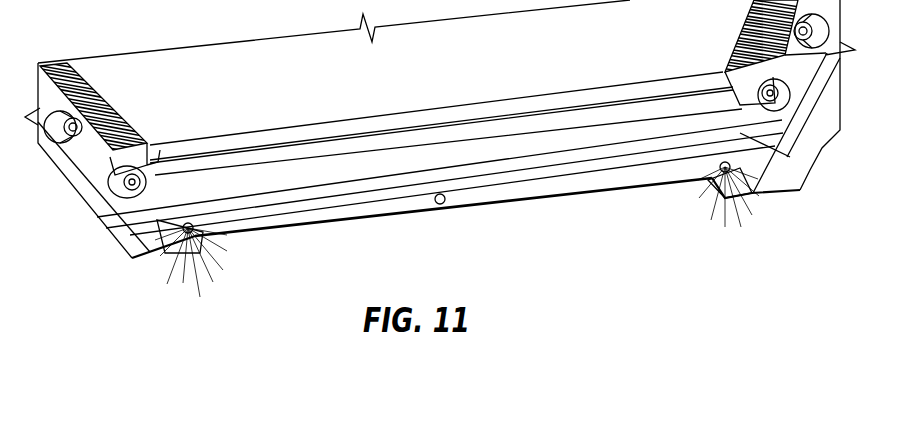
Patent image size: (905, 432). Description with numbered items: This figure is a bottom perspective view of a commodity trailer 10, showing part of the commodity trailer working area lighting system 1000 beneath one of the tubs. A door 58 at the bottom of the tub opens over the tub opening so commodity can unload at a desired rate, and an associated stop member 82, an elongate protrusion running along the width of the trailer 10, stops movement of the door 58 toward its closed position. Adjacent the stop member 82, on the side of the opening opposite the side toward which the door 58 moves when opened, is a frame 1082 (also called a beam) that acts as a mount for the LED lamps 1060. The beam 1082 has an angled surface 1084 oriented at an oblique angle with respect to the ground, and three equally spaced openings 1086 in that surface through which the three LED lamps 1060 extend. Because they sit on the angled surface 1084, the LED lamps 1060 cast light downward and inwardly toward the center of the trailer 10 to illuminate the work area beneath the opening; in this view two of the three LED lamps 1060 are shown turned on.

The commodity trailer 10 is at (228, 324).
The door 58 is at (478, 76).
The stop member 82 is at (305, 200).
The frame 1082 is at (278, 232).
The angled surface 1084 is at (587, 195).
The openings 1086 is at (167, 250).
The LED lamps 1060 is at (188, 255).
The commodity trailer working area lighting system 1000 is at (628, 224).